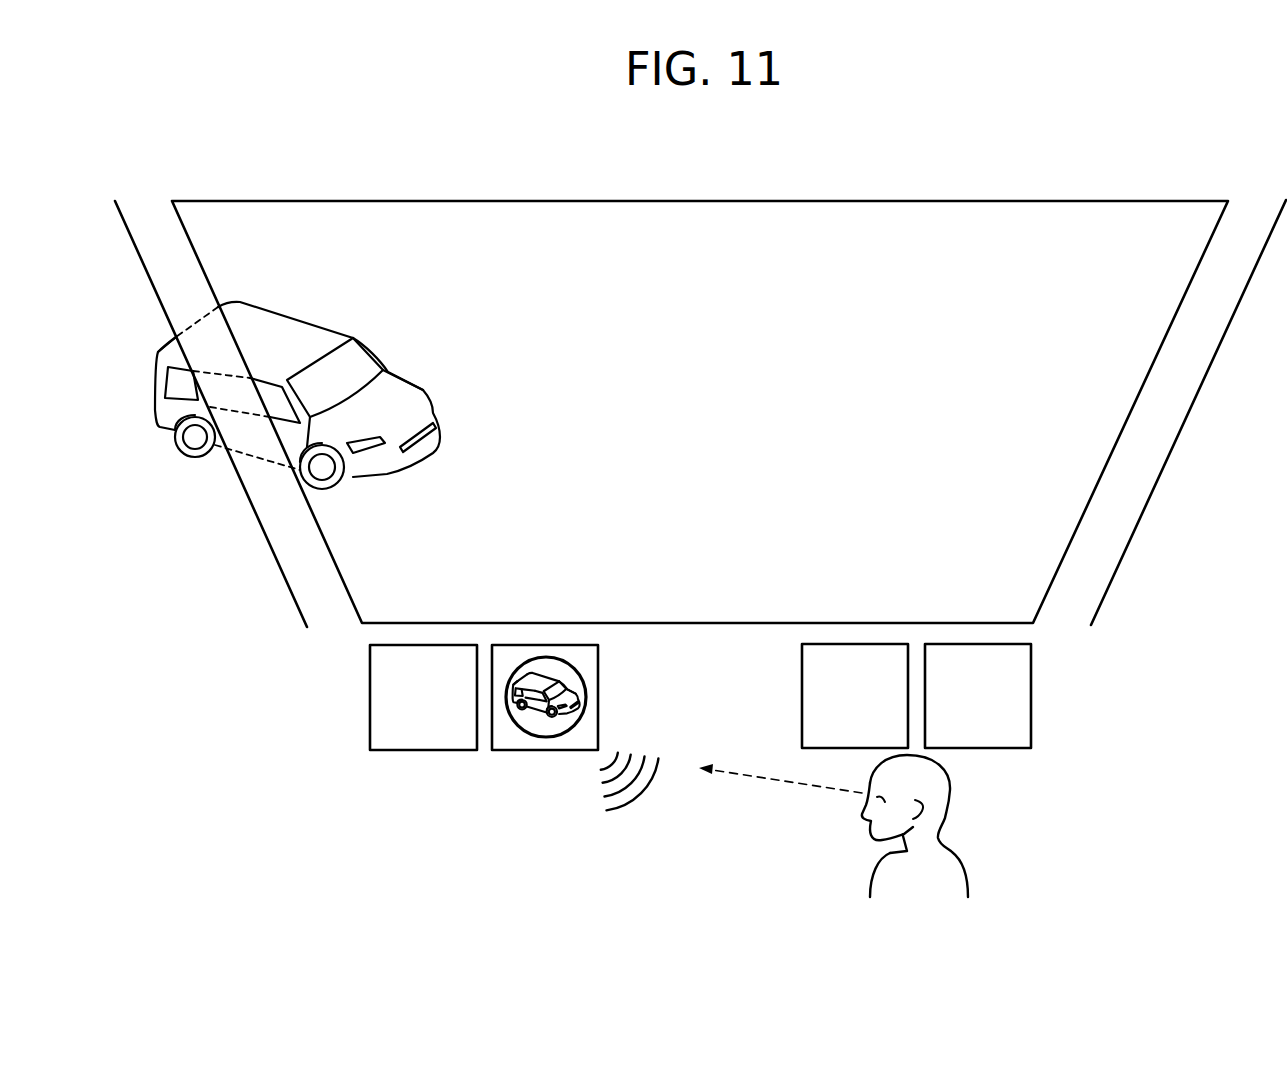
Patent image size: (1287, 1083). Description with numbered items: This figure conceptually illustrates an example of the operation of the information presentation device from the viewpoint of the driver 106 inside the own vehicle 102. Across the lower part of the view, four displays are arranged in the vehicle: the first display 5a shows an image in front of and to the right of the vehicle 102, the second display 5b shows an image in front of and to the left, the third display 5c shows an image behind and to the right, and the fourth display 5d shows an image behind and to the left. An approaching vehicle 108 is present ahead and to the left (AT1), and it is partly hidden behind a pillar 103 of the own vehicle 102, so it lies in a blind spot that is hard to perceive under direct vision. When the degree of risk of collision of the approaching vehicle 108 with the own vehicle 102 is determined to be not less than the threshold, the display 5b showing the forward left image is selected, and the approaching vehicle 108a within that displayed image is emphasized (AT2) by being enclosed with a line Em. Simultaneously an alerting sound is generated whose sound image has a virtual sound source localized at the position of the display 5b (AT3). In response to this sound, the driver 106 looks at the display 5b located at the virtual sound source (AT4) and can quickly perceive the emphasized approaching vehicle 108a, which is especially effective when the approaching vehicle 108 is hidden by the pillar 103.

The own vehicle 102 is at (1084, 176).
The pillar 103 is at (277, 542).
The first display 5a is at (853, 644).
The second display 5b is at (546, 645).
The third display 5c is at (975, 644).
The fourth display 5d is at (423, 645).
The approaching vehicle 108 is at (422, 380).
The approaching vehicle in displayed image 108a is at (552, 675).
The line for emphasis Em is at (578, 663).
The approaching vehicle ahead and to the left AT1 is at (313, 318).
The emphasis of approaching vehicle AT2 is at (545, 751).
The alerting sound generation AT3 is at (644, 790).
The driver looking at display AT4 is at (790, 786).
The driver 106 is at (955, 860).